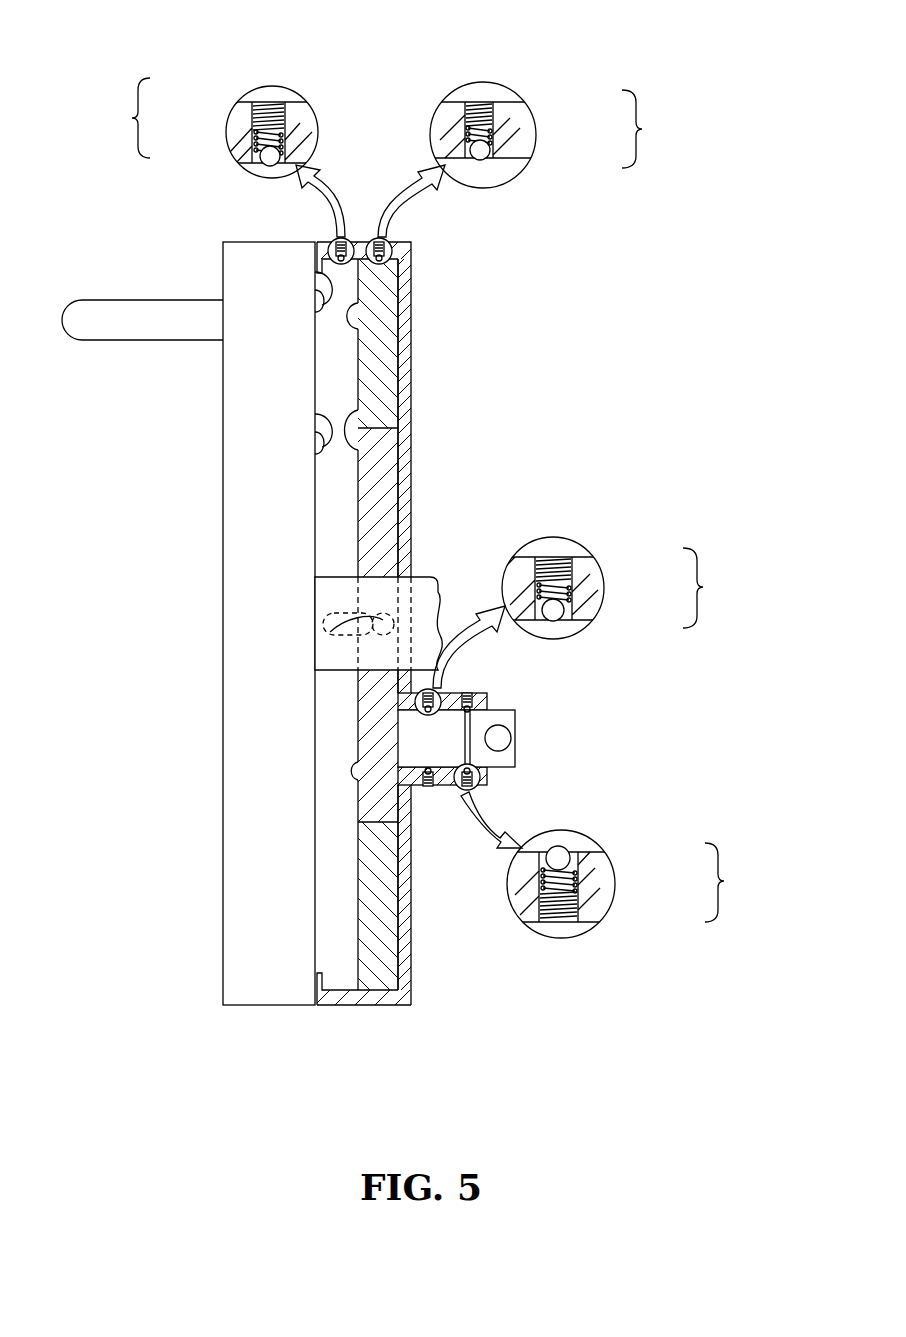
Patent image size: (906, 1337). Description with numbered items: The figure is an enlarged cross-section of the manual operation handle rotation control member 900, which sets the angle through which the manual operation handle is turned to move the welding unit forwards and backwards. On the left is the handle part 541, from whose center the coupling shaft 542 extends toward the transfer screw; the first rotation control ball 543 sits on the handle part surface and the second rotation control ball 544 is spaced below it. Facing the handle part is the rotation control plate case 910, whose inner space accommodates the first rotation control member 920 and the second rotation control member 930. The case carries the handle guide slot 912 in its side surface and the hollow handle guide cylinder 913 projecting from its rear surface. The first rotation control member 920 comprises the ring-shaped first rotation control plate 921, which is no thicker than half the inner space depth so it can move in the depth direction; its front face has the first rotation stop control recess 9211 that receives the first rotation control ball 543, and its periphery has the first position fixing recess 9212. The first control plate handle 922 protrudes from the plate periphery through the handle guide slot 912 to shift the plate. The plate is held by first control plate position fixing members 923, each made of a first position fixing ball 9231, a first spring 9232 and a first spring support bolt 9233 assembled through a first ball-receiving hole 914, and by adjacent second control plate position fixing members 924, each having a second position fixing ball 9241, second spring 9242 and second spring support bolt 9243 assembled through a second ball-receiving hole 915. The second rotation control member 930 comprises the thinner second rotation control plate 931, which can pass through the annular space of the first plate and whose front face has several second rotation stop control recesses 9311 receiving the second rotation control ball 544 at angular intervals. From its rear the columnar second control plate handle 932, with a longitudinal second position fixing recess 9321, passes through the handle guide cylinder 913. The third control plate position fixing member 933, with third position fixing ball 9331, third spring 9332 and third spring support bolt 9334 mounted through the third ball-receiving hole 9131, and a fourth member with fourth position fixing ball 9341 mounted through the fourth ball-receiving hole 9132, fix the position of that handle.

The manual operation handle rotation control member 900 is at (537, 357).
The rotation control plate case 910 is at (355, 1008).
The handle guide slot 912 is at (322, 629).
The handle guide cylinder 913 is at (455, 691).
The third ball-receiving hole 9131 is at (547, 560).
The fourth ball-receiving hole 9132 is at (553, 925).
The first ball-receiving hole 914 is at (272, 100).
The second ball-receiving hole 915 is at (470, 100).
The first rotation control member 920 is at (398, 283).
The first rotation control plate 921 is at (385, 356).
The first rotation stop control recess 9211 is at (355, 316).
The first position fixing recess 9212 is at (488, 162).
The first control plate handle 922 is at (345, 628).
The first control plate position fixing member 923 is at (204, 128).
The first position fixing ball 9231 is at (265, 158).
The first spring 9232 is at (256, 132).
The first spring support bolt 9233 is at (262, 108).
The second control plate position fixing member 924 is at (594, 510).
The second position fixing ball 9241 is at (484, 150).
The second spring 9242 is at (488, 129).
The second spring support bolt 9243 is at (490, 108).
The second rotation control member 930 is at (358, 511).
The second rotation control plate 931 is at (375, 492).
The second rotation stop control recess 9311 is at (356, 432).
The second control plate handle 932 is at (508, 721).
The second position fixing recess 9321 is at (470, 752).
The third control plate position fixing member 933 is at (621, 588).
The third position fixing ball 9331 is at (560, 610).
The third spring 9332 is at (573, 590).
The third spring support bolt 9334 is at (575, 570).
The fourth position fixing ball 9341 is at (566, 858).
The handle part 541 is at (258, 378).
The coupling shaft 542 is at (336, 590).
The first rotation control ball 543 is at (315, 272).
The second rotation control ball 544 is at (315, 414).